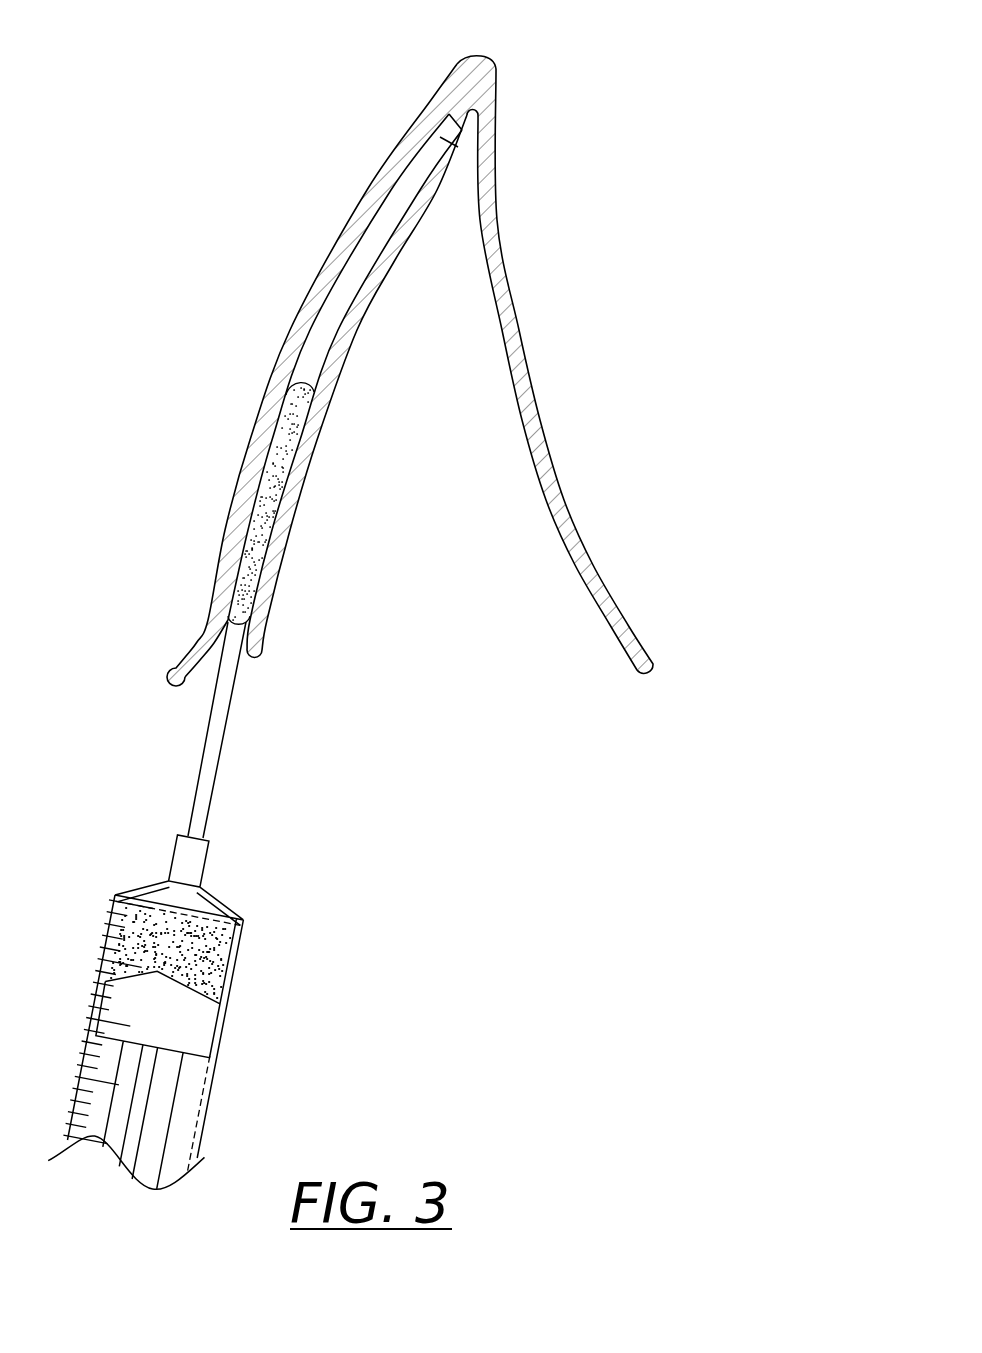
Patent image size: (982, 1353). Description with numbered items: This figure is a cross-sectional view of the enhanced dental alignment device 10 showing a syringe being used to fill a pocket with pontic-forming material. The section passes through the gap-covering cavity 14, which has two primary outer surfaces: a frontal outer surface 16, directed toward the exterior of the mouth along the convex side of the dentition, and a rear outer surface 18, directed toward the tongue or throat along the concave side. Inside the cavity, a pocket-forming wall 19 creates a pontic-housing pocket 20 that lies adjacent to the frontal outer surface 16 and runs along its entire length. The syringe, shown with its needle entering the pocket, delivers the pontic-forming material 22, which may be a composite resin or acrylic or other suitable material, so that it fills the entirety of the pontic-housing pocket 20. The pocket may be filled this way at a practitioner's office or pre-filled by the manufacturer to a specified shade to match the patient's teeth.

The cannula device 10 is at (328, 186).
The gap-covering cavity 14 is at (496, 50).
The frontal outer surface 16 is at (305, 327).
The rear outer surface 18 is at (520, 372).
The pocket-forming wall 19 is at (331, 390).
The pontic-housing pocket 20 is at (343, 293).
The pontic-forming material 22 is at (253, 542).